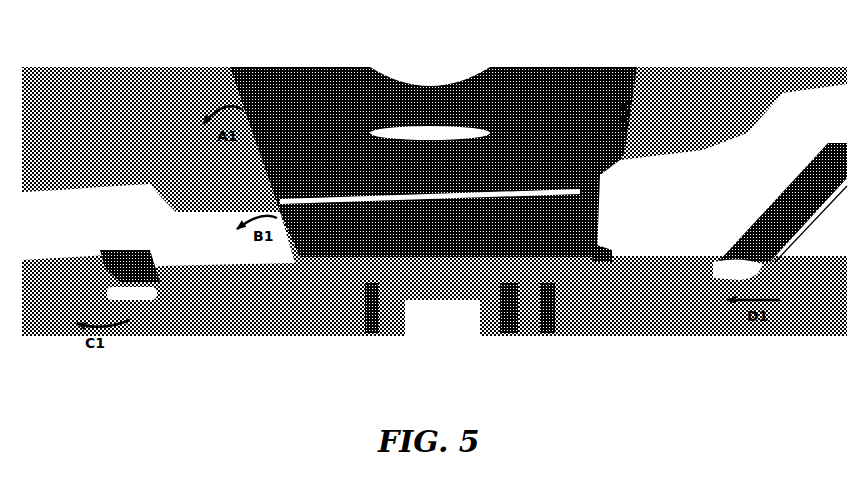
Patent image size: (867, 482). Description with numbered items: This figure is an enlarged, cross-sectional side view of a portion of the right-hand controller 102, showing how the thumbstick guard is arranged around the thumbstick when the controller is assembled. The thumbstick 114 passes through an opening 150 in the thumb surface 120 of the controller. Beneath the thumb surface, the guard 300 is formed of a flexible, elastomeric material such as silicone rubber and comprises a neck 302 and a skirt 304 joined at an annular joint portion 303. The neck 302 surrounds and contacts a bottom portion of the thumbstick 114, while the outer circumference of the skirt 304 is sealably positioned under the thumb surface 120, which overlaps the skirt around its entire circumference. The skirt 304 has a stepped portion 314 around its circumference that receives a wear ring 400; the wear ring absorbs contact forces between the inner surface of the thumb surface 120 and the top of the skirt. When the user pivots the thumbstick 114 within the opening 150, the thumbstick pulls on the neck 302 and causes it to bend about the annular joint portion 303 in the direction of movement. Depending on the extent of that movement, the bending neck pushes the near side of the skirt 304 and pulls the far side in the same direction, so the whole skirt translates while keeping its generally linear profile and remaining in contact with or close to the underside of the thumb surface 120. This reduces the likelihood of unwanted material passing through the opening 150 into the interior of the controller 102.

The right-hand controller 102 is at (128, 76).
The thumbstick 114 is at (623, 115).
The thumb surface 120 is at (127, 200).
The opening 150 is at (712, 108).
The guard 300 is at (297, 316).
The neck 302 is at (513, 257).
The annular joint portion 303 is at (596, 252).
The skirt 304 is at (653, 277).
The stepped portion 314 is at (122, 332).
The wear ring 400 is at (780, 300).